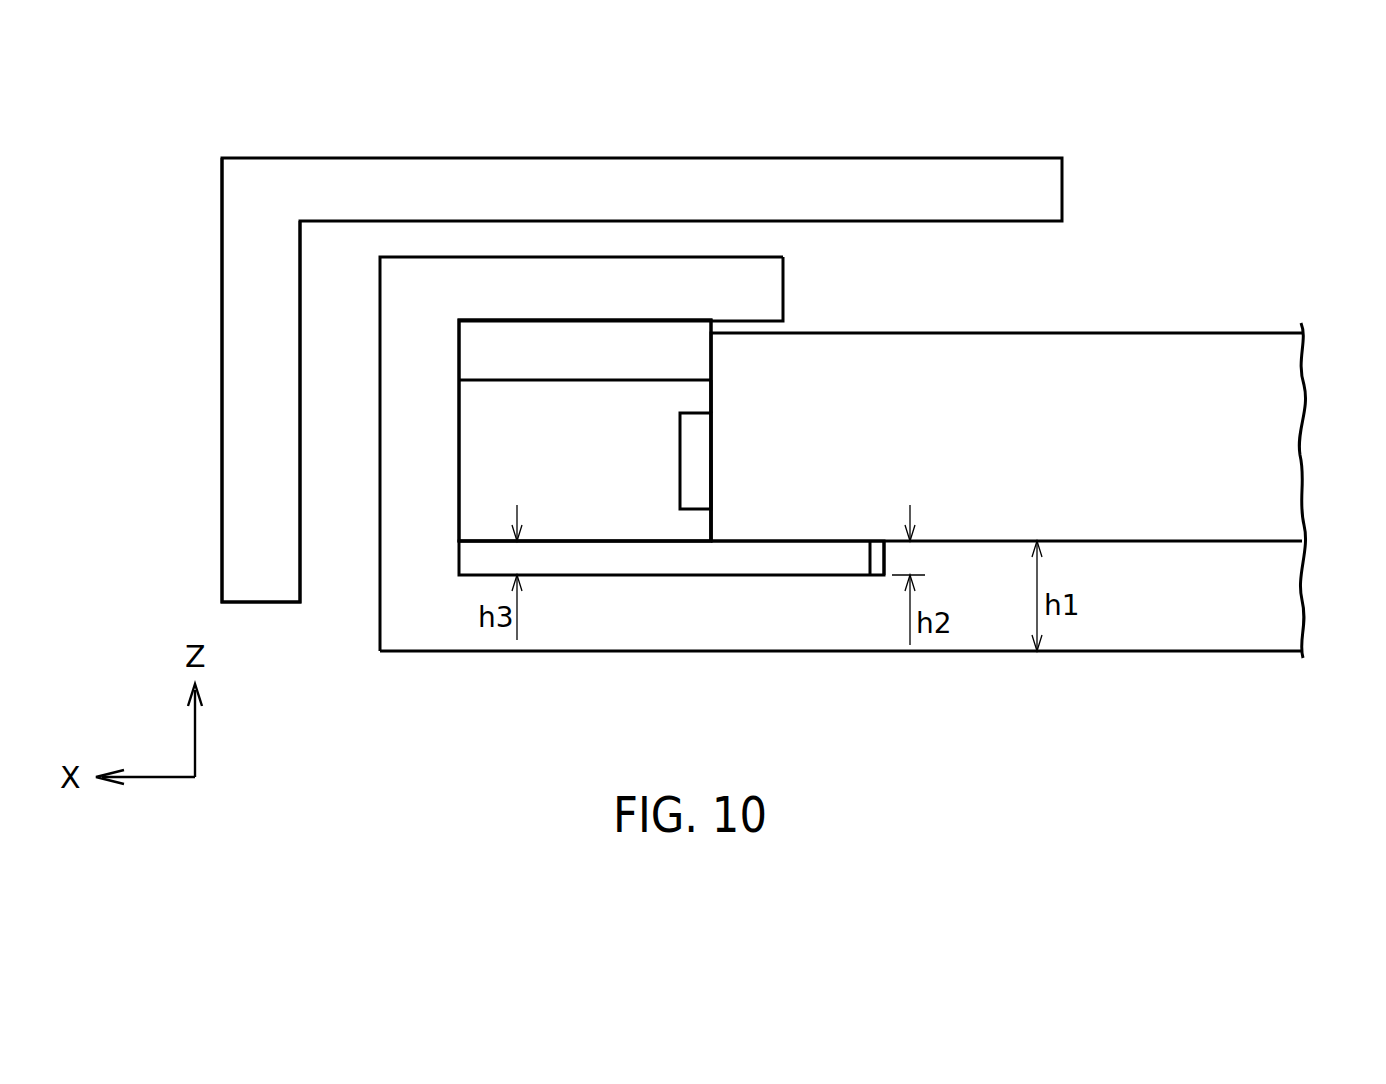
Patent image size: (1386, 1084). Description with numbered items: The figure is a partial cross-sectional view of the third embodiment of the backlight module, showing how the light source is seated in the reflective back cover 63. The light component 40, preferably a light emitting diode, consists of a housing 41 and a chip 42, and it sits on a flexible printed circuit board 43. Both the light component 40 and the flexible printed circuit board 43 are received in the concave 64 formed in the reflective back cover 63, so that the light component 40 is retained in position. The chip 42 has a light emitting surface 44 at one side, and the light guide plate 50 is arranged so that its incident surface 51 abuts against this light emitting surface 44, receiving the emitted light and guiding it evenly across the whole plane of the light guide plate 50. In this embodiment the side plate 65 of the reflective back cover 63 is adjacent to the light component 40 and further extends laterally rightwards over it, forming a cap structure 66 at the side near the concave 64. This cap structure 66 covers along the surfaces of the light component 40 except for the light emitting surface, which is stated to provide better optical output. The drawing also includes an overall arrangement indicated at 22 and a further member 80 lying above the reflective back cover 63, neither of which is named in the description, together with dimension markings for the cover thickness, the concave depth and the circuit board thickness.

The display device 22 is at (1152, 270).
The light component 40 is at (694, 107).
The housing 41 is at (588, 418).
The chip 42 is at (700, 425).
The flexible printed circuit board 43 is at (663, 562).
The light emitting surface 44 is at (713, 490).
The light guide plate 50 is at (1258, 432).
The incident surface 51 is at (714, 398).
The reflective back cover 63 is at (584, 640).
The concave 64 is at (878, 565).
The side plate 65 is at (408, 332).
The cap structure 66 is at (368, 248).
The front frame 80 is at (416, 172).